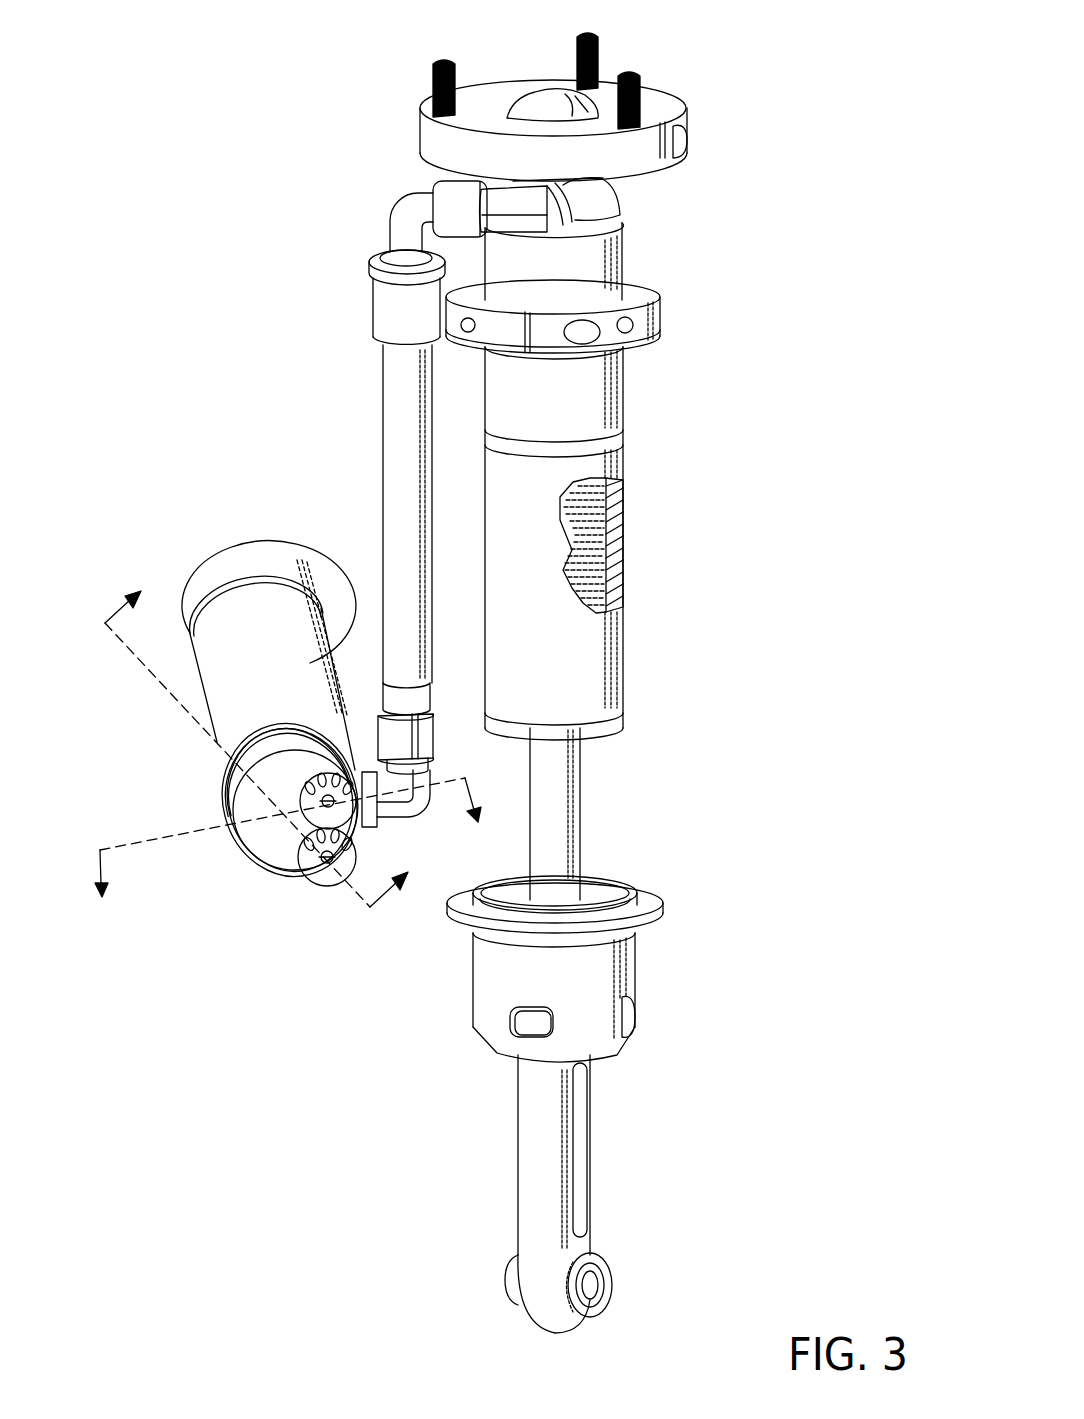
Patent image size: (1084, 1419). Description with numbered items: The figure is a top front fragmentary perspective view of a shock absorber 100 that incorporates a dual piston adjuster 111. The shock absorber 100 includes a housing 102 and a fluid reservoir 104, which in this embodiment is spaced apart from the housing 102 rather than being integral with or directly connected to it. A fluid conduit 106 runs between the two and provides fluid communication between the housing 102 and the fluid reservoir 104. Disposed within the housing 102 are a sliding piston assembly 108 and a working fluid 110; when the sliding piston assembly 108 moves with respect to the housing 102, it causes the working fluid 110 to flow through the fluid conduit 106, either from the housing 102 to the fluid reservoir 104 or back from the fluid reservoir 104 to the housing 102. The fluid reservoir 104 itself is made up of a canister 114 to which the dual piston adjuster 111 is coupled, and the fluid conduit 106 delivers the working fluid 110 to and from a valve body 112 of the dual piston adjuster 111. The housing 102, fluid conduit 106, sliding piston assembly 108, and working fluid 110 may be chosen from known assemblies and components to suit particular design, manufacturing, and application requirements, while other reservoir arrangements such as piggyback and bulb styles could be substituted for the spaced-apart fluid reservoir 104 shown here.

The shock absorber 100 is at (497, 666).
The housing 102 is at (593, 755).
The fluid reservoir 104 is at (237, 710).
The fluid conduit 106 is at (393, 211).
The sliding piston assembly 108 is at (603, 588).
The working fluid 110 is at (603, 533).
The dual piston adjuster 111 is at (283, 888).
The valve body 112 is at (226, 785).
The canister 114 is at (307, 658).